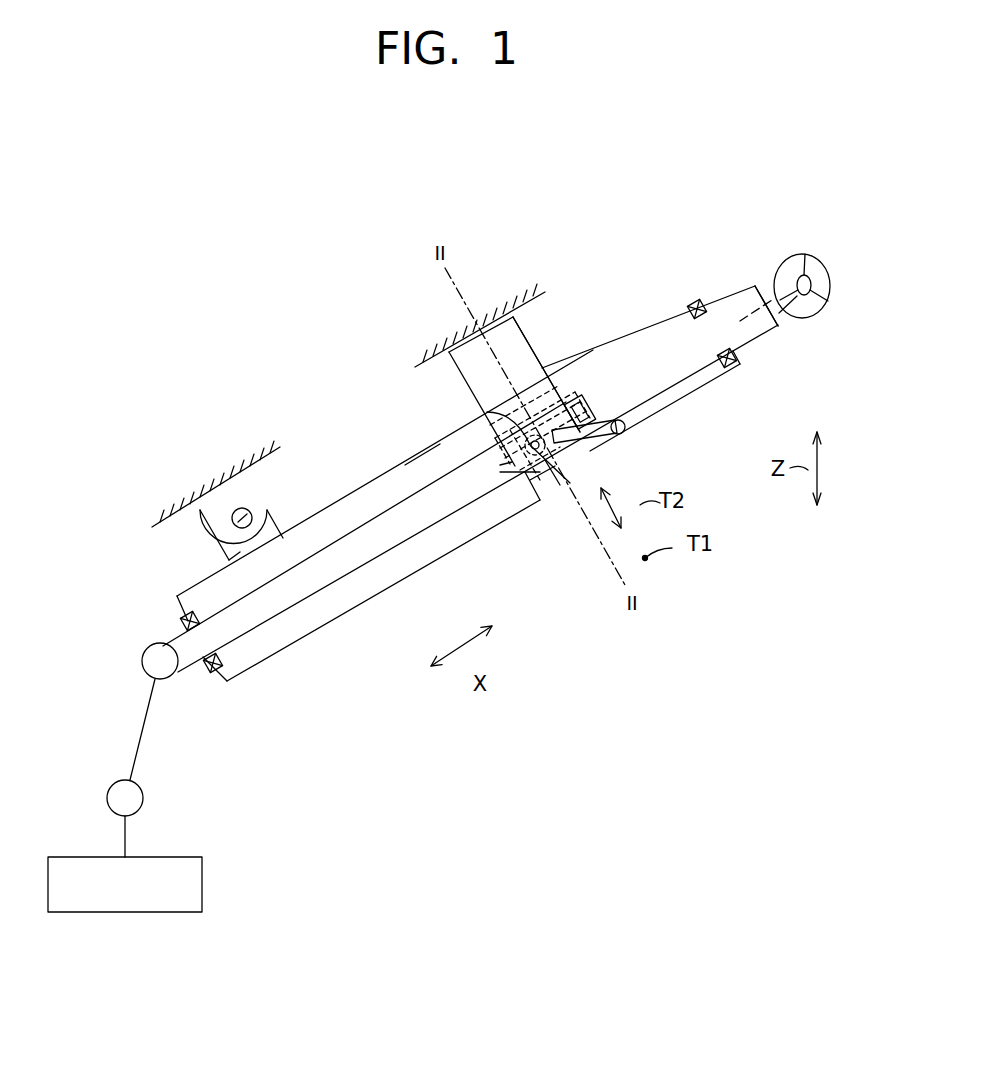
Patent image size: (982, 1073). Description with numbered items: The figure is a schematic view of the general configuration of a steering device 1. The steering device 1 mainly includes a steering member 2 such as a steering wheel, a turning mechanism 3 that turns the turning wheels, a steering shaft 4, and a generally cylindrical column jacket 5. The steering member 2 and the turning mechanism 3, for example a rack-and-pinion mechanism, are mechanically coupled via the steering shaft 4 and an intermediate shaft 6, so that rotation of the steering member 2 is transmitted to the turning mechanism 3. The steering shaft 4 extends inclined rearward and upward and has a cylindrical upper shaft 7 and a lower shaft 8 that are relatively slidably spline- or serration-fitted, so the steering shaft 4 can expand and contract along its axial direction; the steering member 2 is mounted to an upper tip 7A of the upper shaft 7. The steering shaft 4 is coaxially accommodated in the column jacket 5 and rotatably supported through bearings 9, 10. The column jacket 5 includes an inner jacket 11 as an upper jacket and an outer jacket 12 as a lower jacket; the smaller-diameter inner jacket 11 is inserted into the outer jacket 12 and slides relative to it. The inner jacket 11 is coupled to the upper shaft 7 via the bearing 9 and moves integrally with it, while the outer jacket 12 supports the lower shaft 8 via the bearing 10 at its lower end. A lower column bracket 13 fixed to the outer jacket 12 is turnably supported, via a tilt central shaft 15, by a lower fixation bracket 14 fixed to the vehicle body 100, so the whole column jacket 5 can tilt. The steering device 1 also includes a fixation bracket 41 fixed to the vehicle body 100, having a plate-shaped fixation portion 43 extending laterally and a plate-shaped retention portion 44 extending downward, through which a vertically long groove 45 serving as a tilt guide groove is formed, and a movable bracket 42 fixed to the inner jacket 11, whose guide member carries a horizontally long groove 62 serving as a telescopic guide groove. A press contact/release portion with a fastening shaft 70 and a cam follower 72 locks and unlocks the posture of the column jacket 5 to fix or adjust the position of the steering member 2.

The steering device 1 is at (236, 370).
The steering member 2 is at (789, 256).
The turning mechanism 3 is at (202, 884).
The steering shaft 4 is at (723, 299).
The column jacket 5 is at (693, 401).
The intermediate shaft 6 is at (140, 742).
The upper shaft 7 is at (758, 334).
The upper tip 7A is at (781, 319).
The lower shaft 8 is at (305, 583).
The bearing 9 is at (736, 368).
The bearing 10 is at (212, 670).
The inner jacket 11 is at (636, 330).
The outer jacket 12 is at (366, 482).
The lower column bracket 13 is at (240, 550).
The lower fixation bracket 14 is at (207, 520).
The tilt central shaft 15 is at (252, 513).
The fixation bracket 41 is at (537, 352).
The movable bracket 42 is at (500, 465).
The fixation portion 43 is at (513, 325).
The retention portion 44 is at (462, 380).
The vertically long groove 45 is at (556, 472).
The horizontally long groove 62 is at (540, 498).
The fastening shaft 70 is at (487, 412).
The cam follower 72 is at (626, 440).
The vehicle body 100 is at (167, 508).